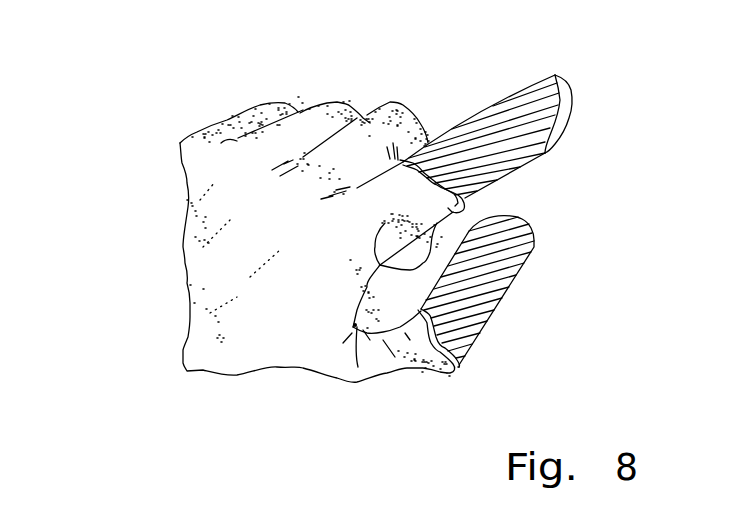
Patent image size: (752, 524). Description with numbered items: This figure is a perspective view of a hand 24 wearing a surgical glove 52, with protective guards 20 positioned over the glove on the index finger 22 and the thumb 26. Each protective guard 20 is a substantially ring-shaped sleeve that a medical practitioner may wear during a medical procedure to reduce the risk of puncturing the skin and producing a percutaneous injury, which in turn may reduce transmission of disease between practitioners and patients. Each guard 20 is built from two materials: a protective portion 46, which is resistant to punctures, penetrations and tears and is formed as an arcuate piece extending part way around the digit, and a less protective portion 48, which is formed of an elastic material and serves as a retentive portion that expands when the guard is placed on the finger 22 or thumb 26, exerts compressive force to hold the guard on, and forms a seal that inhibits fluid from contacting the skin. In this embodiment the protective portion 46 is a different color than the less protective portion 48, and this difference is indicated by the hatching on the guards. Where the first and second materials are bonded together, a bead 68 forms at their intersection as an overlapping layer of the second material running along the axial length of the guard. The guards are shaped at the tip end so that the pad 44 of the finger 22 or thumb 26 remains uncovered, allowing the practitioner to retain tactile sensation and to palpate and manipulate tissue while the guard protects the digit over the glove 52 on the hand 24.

The protective guard 20 is at (547, 215).
The finger 22 is at (390, 198).
The hand 24 is at (241, 244).
The thumb 26 is at (427, 364).
The pad 44 is at (567, 123).
The protective portion 46 is at (503, 115).
The less protective portion 48 is at (520, 168).
The surgical glove 52 is at (280, 323).
The bead 68 is at (543, 154).